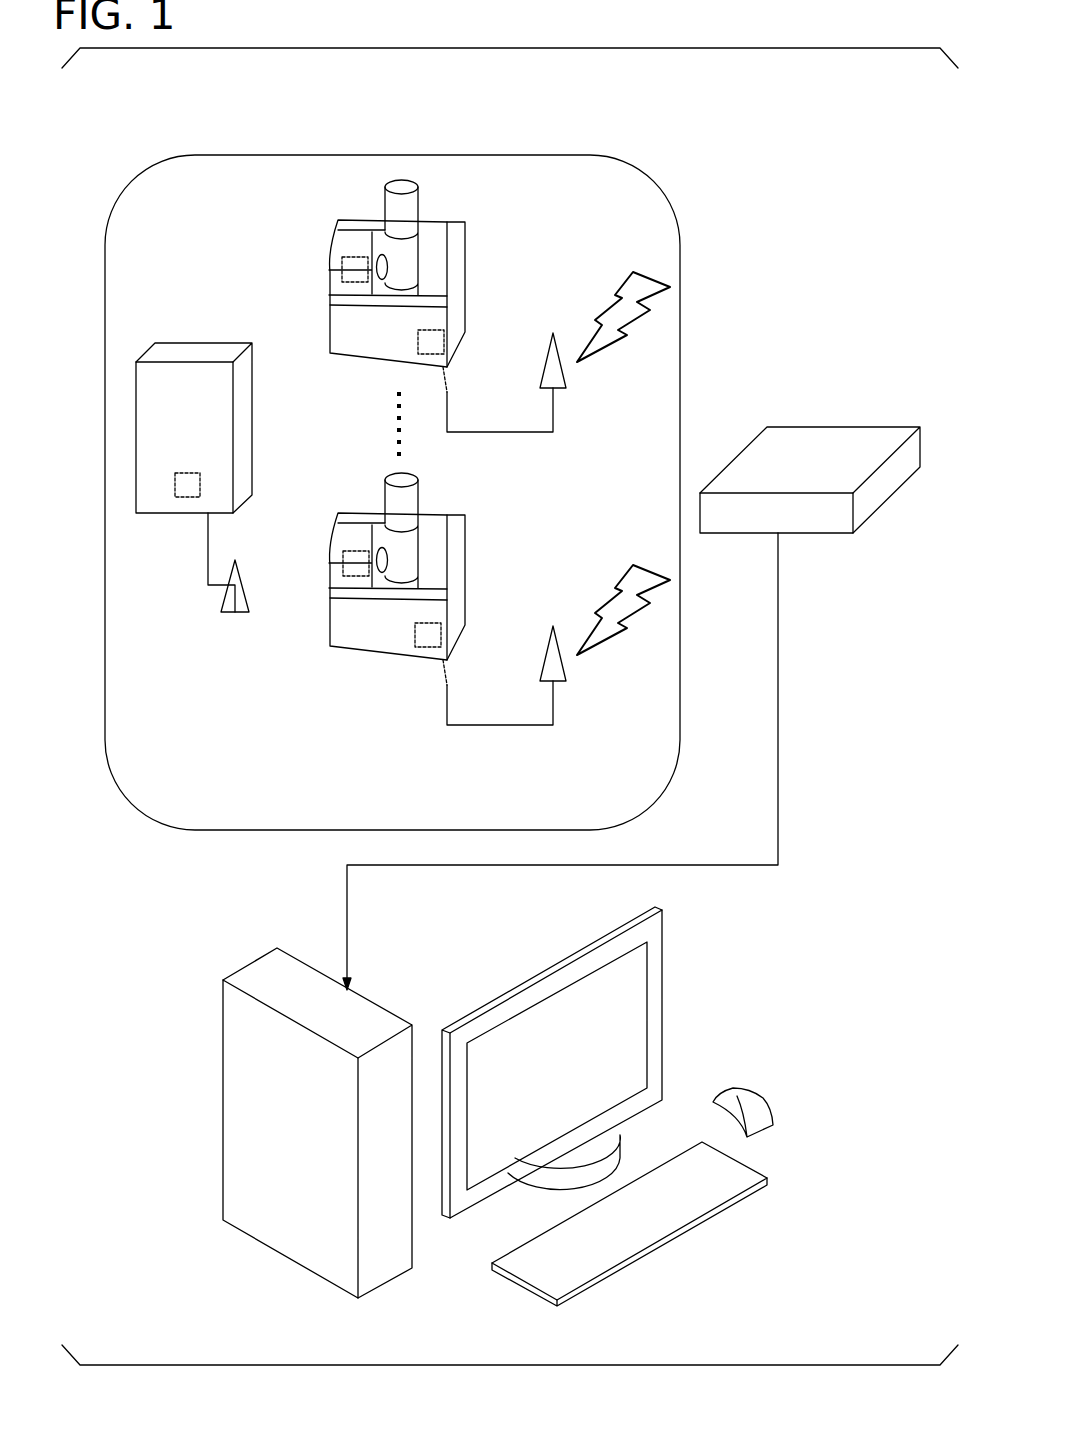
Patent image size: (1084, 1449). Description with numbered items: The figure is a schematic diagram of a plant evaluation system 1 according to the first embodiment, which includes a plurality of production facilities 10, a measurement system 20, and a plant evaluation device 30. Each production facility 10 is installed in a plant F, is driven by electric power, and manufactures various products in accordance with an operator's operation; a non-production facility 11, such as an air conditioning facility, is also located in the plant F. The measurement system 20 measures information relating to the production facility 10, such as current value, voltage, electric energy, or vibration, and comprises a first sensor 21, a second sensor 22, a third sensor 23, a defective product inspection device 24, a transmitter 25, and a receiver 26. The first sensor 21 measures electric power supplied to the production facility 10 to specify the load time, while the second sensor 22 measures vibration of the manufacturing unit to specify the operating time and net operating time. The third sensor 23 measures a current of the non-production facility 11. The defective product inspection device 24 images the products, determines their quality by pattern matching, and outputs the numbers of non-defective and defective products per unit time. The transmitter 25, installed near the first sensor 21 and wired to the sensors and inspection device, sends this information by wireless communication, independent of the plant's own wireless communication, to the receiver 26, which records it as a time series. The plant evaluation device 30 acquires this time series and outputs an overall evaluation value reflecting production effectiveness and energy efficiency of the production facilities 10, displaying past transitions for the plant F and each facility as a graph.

The plant evaluation system 1 is at (810, 140).
The plant F is at (547, 155).
The production facility 10 is at (440, 220).
The non-production facility 11 is at (210, 343).
The measurement system 20 is at (810, 430).
The first sensor 21 is at (415, 347).
The second sensor 22 is at (352, 285).
The third sensor 23 is at (175, 497).
The defective product inspection device 24 is at (385, 194).
The transmitter 25 is at (546, 363).
The receiver 26 is at (847, 430).
The plant evaluation device 30 is at (459, 1292).